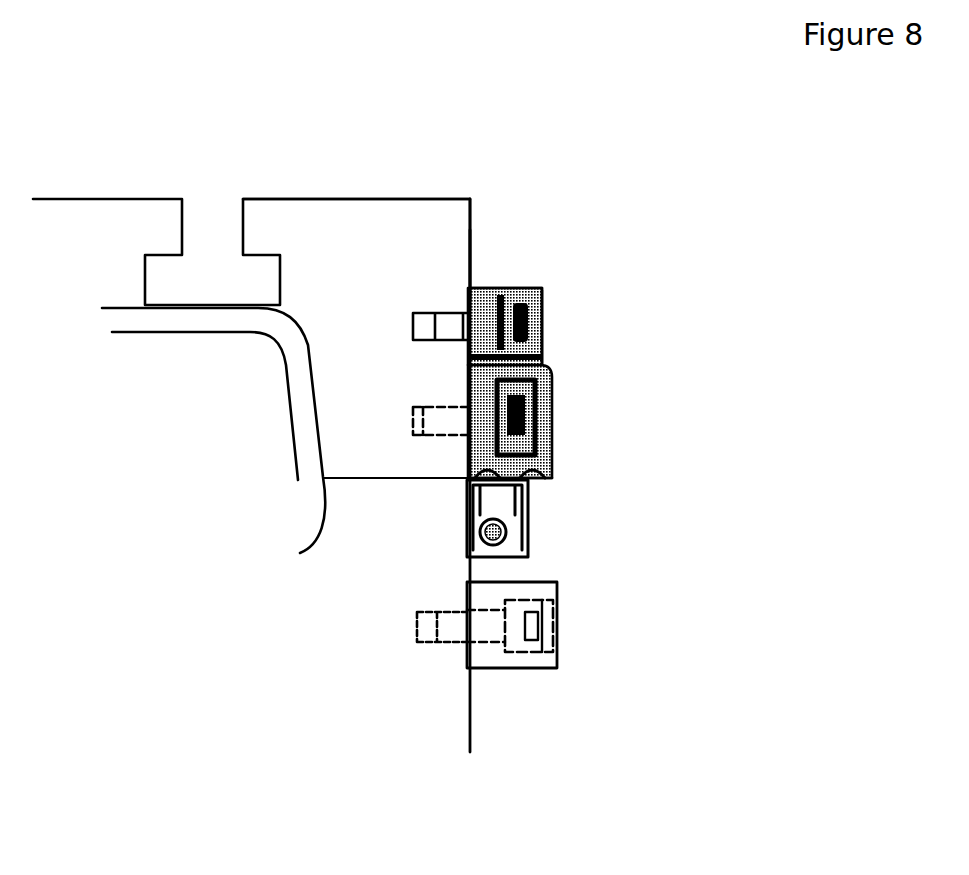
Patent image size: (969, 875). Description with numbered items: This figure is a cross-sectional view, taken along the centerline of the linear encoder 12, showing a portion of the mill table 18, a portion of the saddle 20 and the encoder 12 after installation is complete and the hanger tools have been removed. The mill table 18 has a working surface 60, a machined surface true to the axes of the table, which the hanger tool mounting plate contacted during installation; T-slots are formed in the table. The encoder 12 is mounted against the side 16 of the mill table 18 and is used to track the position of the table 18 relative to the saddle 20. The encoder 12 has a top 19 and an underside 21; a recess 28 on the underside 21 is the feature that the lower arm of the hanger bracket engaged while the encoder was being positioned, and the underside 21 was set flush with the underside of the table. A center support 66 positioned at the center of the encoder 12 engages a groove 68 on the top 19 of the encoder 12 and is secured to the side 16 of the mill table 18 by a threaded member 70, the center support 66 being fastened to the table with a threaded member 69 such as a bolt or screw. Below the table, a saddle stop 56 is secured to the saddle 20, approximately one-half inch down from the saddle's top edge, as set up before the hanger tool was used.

The mill table 18 is at (103, 193).
The working surface 60 is at (412, 198).
The threaded member 69 is at (450, 317).
The side 16 is at (472, 267).
The threaded member 70 is at (490, 300).
The center support 66 is at (543, 290).
The top 19 is at (541, 346).
The groove 68 is at (543, 355).
The linear encoder 12 is at (552, 377).
The recess 28 is at (530, 480).
The underside 21 is at (575, 511).
The saddle stop 56 is at (533, 668).
The saddle 20 is at (407, 698).